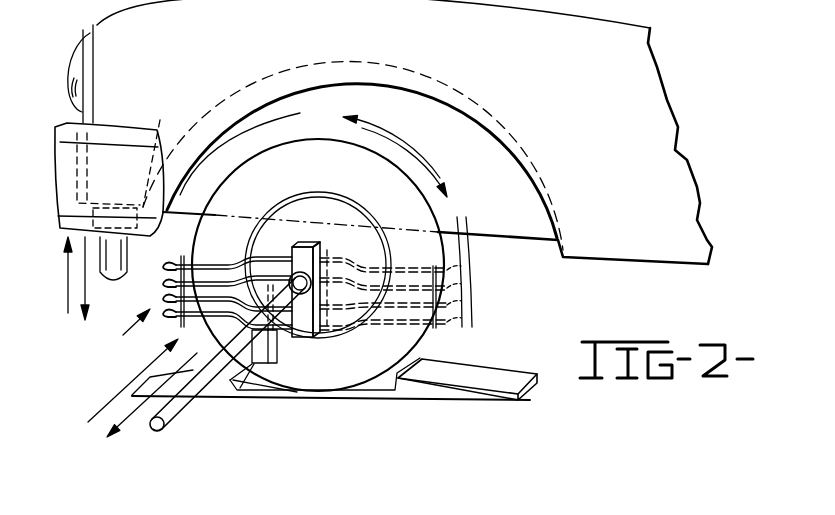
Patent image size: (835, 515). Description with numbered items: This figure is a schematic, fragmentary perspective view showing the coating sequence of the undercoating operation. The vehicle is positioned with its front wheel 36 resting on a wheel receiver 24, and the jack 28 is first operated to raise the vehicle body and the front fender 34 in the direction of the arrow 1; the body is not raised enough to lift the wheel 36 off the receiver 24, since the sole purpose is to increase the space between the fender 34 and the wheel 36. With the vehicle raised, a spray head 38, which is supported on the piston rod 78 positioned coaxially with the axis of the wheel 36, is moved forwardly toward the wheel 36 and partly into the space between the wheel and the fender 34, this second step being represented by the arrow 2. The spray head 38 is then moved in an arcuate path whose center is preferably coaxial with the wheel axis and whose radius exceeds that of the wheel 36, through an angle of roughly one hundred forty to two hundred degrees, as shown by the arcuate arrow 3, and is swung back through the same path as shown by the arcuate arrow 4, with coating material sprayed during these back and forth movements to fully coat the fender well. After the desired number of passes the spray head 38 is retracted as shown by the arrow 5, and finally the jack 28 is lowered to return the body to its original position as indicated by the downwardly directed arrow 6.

The front fender 34 is at (97, 40).
The jack 28 is at (132, 248).
The front wheel 36 is at (423, 337).
The wheel receiver 24 is at (417, 400).
The piston rod 78 is at (188, 407).
The arrow 1 is at (62, 285).
The arrow 2 is at (115, 393).
The arcuate arrow 3 is at (432, 172).
The arcuate arrow 4 is at (398, 136).
The arrow 5 is at (130, 420).
The arrow 6 is at (85, 288).
The spray head 38 is at (122, 328).